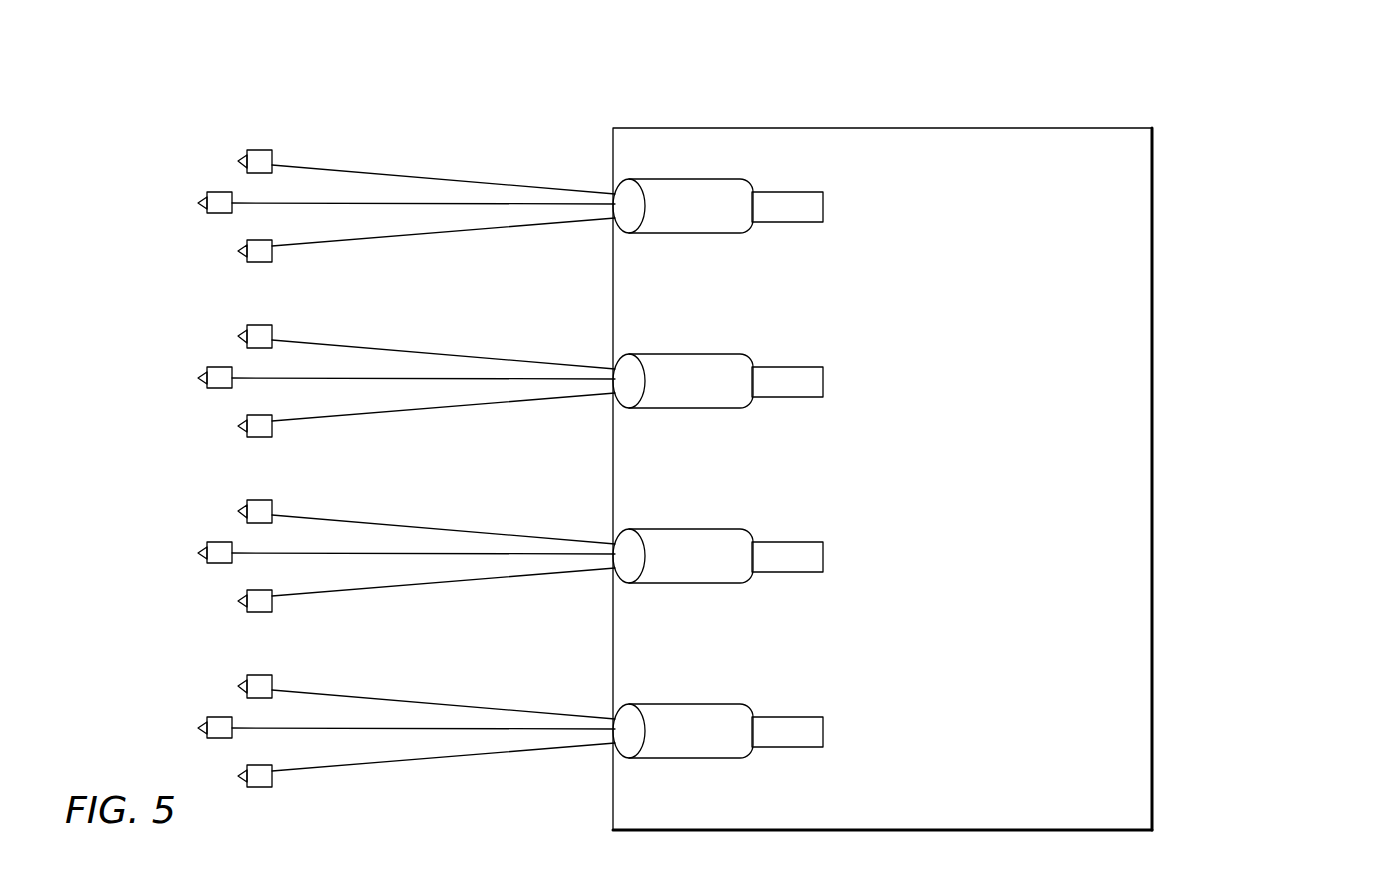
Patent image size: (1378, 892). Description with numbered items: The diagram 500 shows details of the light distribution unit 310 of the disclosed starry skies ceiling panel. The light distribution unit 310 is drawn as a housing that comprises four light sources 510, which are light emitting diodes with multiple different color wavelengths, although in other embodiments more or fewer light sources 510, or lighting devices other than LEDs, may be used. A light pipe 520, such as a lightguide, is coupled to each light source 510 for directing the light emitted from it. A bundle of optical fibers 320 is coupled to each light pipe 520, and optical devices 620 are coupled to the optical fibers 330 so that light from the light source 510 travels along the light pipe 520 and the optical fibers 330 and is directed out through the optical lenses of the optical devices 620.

The diagram 500 is at (1240, 128).
The light distribution unit 310 is at (1078, 183).
The bundle of optical fibers 320 is at (598, 193).
The optical fibers 330 is at (387, 175).
The light source 510 is at (787, 192).
The light pipe 520 is at (676, 179).
The optical device 620 is at (258, 156).